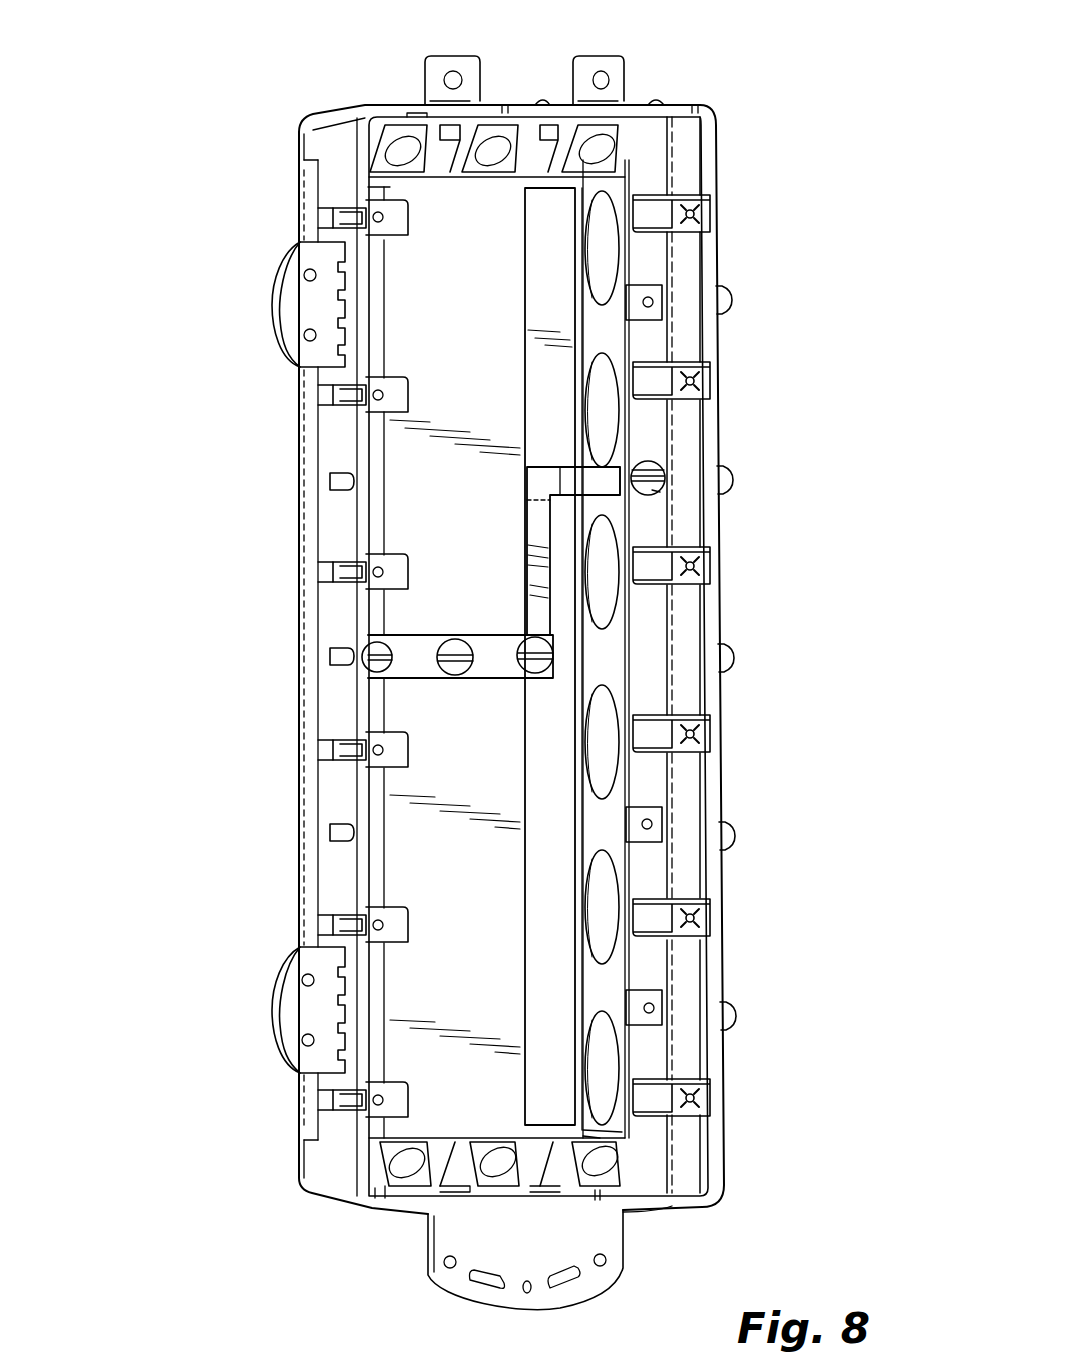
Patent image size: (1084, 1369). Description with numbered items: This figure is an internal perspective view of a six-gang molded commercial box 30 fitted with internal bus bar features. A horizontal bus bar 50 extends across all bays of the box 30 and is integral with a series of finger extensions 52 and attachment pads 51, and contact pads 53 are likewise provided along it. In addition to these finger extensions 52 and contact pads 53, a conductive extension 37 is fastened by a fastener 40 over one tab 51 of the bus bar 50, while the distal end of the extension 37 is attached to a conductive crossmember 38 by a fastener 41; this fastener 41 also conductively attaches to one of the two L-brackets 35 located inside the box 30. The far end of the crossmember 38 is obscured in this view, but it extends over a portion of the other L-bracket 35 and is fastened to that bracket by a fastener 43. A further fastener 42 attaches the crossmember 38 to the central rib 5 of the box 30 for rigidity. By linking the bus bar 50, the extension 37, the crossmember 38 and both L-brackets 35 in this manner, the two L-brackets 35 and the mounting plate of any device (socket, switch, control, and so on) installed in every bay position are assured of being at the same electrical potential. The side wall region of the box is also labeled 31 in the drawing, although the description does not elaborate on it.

The central rib 5 is at (468, 392).
The molded commercial box 30 is at (268, 112).
The side wall 31 is at (336, 1165).
The L-bracket 35 is at (376, 835).
The conductive extension 37 is at (540, 545).
The conductive crossmember 38 is at (497, 668).
The fastener 40 is at (652, 480).
The fastener 41 is at (526, 645).
The fastener 42 is at (453, 642).
The fastener 43 is at (382, 668).
The horizontal bus bar 50 is at (650, 258).
The attachment pad 51 is at (642, 332).
The finger extension 52 is at (408, 212).
The contact pad 53 is at (690, 212).